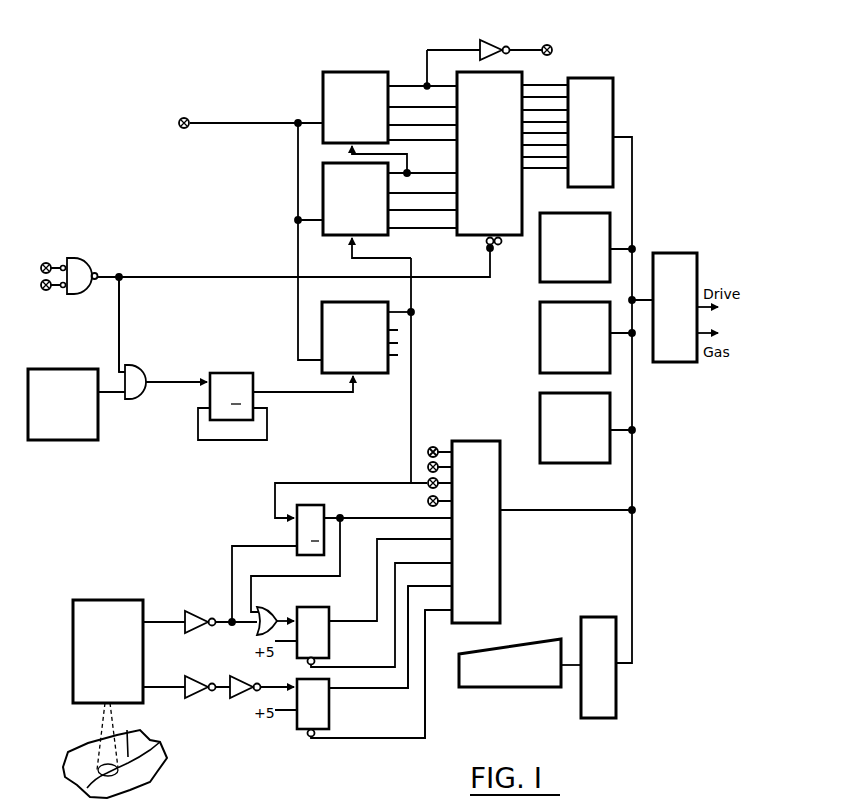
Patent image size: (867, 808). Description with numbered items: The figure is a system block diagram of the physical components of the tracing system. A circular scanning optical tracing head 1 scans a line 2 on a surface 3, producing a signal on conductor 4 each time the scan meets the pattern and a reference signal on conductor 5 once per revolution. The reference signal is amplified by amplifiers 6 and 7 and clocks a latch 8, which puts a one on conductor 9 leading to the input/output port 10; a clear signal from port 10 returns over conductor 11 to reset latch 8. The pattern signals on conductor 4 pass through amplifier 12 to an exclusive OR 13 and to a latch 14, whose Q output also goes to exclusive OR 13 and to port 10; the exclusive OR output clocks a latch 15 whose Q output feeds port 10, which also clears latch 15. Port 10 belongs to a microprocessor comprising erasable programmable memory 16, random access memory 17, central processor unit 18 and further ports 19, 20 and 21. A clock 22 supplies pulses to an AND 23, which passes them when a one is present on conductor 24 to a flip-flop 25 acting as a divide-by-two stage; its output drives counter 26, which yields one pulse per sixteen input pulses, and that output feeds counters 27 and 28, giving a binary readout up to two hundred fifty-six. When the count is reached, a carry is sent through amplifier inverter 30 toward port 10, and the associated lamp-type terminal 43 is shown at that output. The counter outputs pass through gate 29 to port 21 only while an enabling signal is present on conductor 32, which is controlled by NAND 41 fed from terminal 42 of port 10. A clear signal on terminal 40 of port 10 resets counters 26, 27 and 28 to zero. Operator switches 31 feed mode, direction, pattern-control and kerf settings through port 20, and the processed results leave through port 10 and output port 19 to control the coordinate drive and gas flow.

The circular scanning optical tracing head 1 is at (73, 612).
The line 2 is at (115, 760).
The surface 3 is at (143, 768).
The conductor 4 is at (157, 618).
The conductor 5 is at (162, 686).
The amplifier 6 is at (197, 698).
The amplifier 7 is at (240, 698).
The latch 8 is at (297, 718).
The conductor 9 is at (355, 690).
The port 10 is at (500, 552).
The conductor 11 is at (375, 738).
The amplifier 12 is at (197, 608).
The exclusive OR 13 is at (275, 612).
The latch 14 is at (297, 530).
The latch 15 is at (325, 608).
The erasable programmable memory 16 is at (540, 423).
The random access memory 17 is at (540, 325).
The central processor unit 18 is at (540, 258).
The output port 19 is at (665, 362).
The port 20 is at (616, 707).
The port 21 is at (613, 113).
The clock 22 is at (98, 426).
The AND 23 is at (140, 367).
The conductor 24 is at (119, 333).
The flip-flop 25 is at (237, 373).
The counter 26 is at (365, 373).
The counter 27 is at (330, 236).
The counter 28 is at (325, 140).
The gate 29 is at (470, 236).
The amplifier inverter 30 is at (488, 40).
The operator switches 31 is at (496, 688).
The conductor 32 is at (255, 275).
The terminal 40 is at (179, 120).
The NAND 41 is at (80, 258).
The terminal 42 is at (48, 290).
The lamp / indicator 43 is at (553, 47).